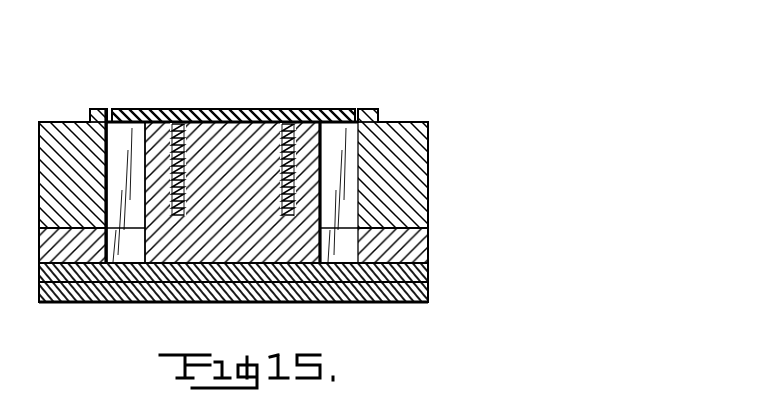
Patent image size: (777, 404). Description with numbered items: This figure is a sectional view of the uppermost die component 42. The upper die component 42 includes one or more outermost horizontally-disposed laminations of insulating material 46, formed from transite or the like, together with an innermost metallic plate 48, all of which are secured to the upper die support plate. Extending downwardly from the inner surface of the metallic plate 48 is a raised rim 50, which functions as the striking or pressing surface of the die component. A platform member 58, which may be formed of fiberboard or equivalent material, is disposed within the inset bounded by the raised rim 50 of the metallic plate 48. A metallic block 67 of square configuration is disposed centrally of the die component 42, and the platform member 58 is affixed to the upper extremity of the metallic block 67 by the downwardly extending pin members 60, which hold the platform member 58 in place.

The upper die component 42 is at (529, 40).
The laminations of insulating material 46 is at (428, 278).
The metallic plate 48 is at (56, 122).
The raised rim 50 is at (104, 108).
The platform member 58 is at (233, 109).
The pin members 60 is at (178, 120).
The metallic block 67 is at (312, 137).